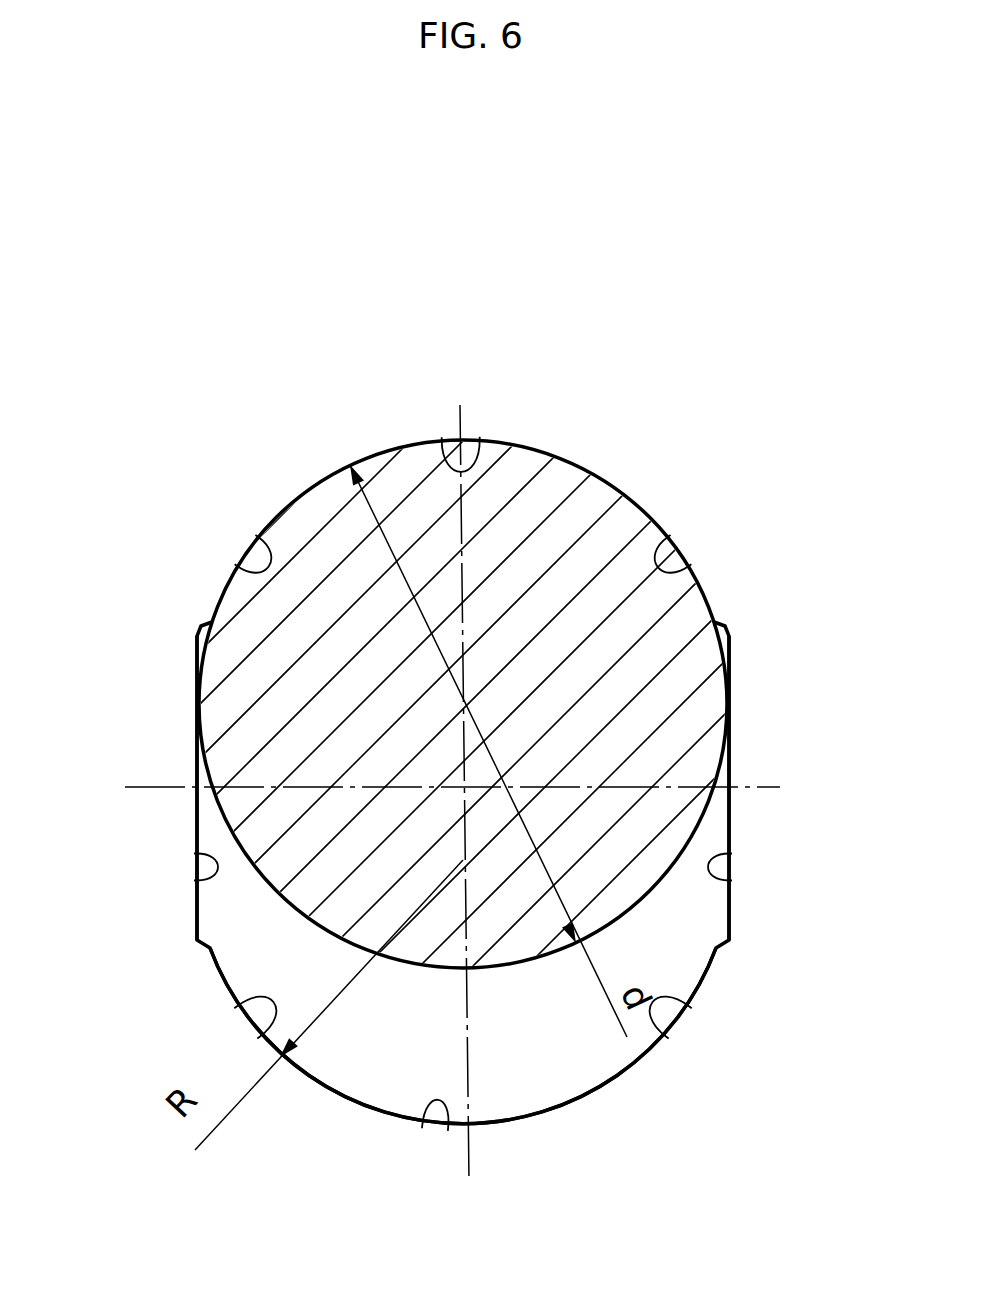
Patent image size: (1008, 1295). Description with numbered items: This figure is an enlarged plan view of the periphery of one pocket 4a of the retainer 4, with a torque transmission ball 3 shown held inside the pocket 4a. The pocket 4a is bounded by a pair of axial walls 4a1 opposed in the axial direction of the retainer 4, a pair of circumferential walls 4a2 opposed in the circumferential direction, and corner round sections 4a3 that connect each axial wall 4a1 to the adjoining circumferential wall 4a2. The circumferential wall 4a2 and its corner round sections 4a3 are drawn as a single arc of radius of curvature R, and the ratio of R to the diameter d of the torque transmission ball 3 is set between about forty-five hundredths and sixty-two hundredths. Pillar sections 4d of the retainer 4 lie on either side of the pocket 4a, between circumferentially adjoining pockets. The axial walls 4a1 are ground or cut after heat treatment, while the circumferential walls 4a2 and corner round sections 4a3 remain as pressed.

The torque transmission ball 3 is at (428, 967).
The retainer 4 is at (636, 420).
The pocket 4a is at (548, 1062).
The axial wall 4a1 is at (193, 882).
The circumferential wall 4a2 is at (480, 440).
The corner round section 4a3 is at (257, 537).
The pillar section 4d is at (96, 747).